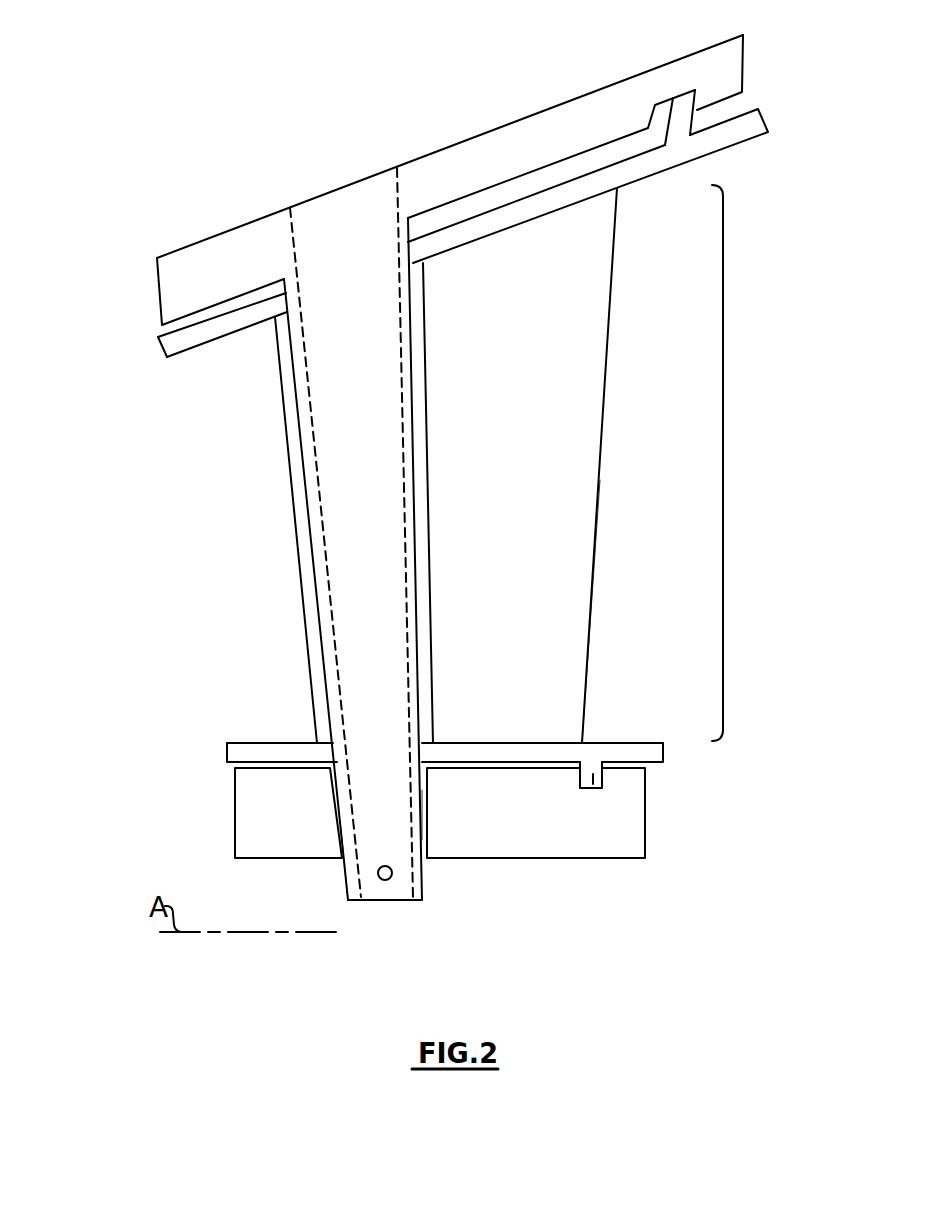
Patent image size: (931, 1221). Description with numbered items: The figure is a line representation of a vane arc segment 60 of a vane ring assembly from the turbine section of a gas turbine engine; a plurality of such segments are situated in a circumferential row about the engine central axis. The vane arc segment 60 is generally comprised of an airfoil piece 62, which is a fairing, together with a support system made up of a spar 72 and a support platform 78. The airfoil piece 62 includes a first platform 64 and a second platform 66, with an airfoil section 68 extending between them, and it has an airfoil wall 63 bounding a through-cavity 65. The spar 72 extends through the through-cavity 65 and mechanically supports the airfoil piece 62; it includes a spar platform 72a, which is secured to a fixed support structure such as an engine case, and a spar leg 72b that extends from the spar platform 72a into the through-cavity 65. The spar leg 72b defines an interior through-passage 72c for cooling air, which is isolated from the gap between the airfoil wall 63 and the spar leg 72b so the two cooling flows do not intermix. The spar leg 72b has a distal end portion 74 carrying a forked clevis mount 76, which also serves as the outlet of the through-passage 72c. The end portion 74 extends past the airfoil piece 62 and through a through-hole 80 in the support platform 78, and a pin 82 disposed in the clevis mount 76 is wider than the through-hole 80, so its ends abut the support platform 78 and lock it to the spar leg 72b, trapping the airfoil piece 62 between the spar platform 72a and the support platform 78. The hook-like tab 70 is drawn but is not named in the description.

The vane arc segment 60 is at (148, 745).
The airfoil piece 62 is at (587, 698).
The airfoil wall 63 is at (577, 402).
The first platform 64 is at (727, 410).
The through-cavity 65 is at (307, 580).
The second platform 66 is at (738, 127).
The airfoil section 68 is at (648, 753).
The hook tab 70 is at (682, 118).
The spar 72 is at (317, 192).
The spar platform 72a is at (545, 125).
The spar leg 72b is at (305, 500).
The through-passage 72c is at (403, 486).
The distal end portion 74 is at (432, 875).
The clevis mount 76 is at (367, 852).
The support platform 78 is at (622, 830).
The through-hole 80 is at (423, 816).
The pin 82 is at (387, 881).